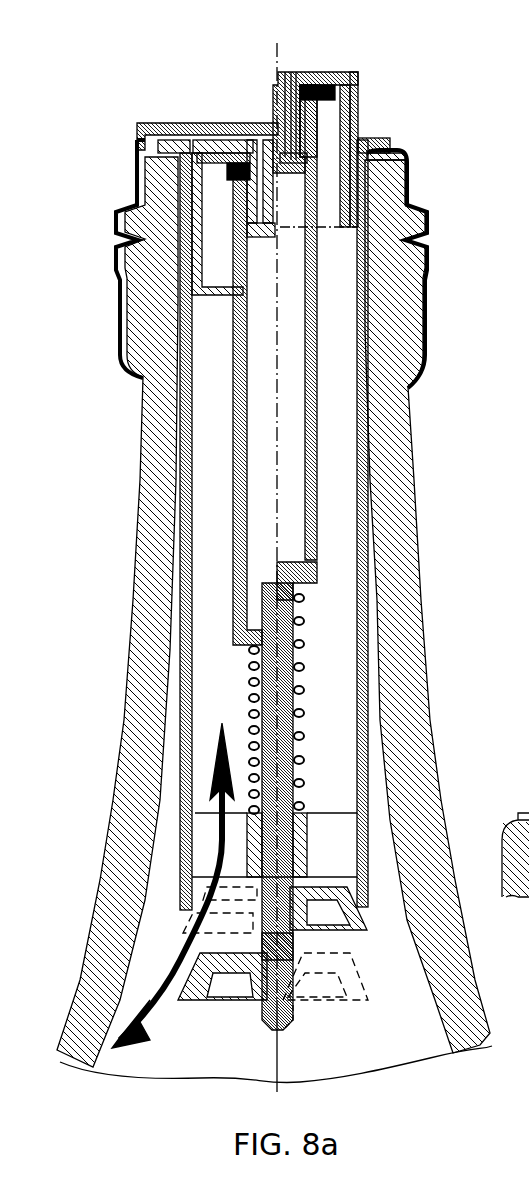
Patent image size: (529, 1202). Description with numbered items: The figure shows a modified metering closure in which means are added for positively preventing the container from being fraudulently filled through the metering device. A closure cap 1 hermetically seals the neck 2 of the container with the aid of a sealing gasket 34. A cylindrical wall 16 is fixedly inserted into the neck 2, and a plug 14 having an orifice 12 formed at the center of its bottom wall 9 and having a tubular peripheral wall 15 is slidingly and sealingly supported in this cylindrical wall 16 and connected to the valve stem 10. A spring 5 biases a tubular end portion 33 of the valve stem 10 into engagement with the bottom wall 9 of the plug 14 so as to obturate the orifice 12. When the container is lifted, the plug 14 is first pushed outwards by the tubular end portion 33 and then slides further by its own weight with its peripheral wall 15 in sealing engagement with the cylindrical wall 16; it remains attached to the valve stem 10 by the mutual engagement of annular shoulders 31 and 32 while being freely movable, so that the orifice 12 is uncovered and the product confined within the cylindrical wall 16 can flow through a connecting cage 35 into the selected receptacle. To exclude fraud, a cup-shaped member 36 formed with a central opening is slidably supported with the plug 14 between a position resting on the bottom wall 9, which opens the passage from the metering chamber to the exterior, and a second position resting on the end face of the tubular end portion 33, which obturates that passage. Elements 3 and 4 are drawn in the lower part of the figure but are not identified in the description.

The closure cap 1 is at (137, 190).
The neck 2 is at (157, 425).
The lower valve seat 3 is at (187, 993).
The bottom plate 4 is at (187, 900).
The spring 5 is at (300, 692).
The bottom wall 9 is at (322, 72).
The valve stem 10 is at (282, 760).
The orifice 12 is at (285, 86).
The plug 14 is at (223, 240).
The tubular peripheral wall 15 is at (358, 113).
The cylindrical wall 16 is at (360, 587).
The annular shoulder 31 is at (343, 72).
The annular shoulder 32 is at (390, 147).
The tubular end portion 33 is at (317, 440).
The sealing gasket 34 is at (190, 122).
The connecting cage 35 is at (265, 200).
The cup-shaped member 36 is at (365, 212).